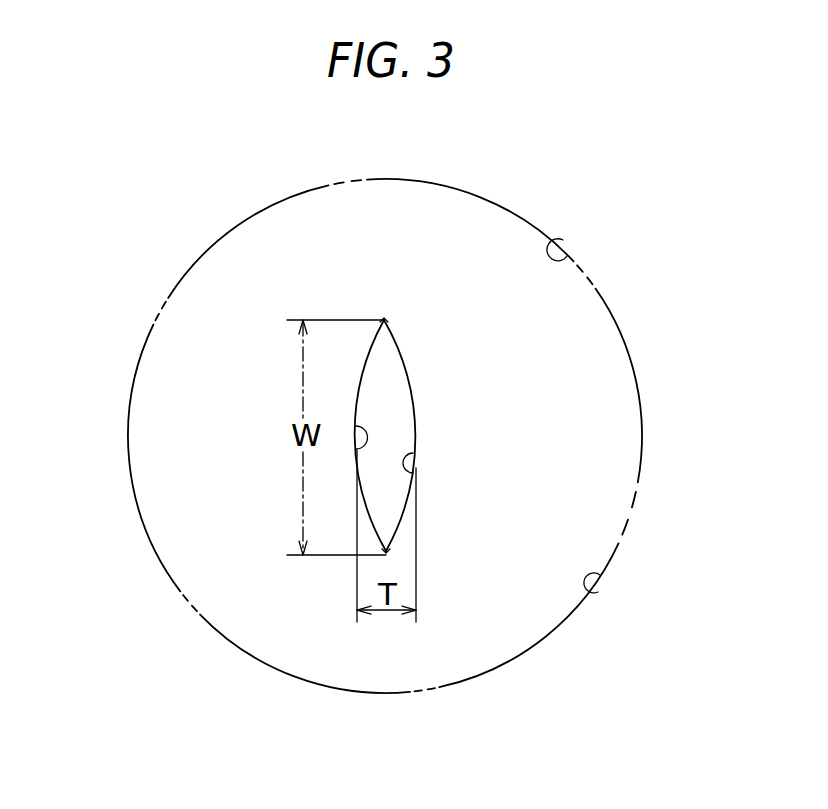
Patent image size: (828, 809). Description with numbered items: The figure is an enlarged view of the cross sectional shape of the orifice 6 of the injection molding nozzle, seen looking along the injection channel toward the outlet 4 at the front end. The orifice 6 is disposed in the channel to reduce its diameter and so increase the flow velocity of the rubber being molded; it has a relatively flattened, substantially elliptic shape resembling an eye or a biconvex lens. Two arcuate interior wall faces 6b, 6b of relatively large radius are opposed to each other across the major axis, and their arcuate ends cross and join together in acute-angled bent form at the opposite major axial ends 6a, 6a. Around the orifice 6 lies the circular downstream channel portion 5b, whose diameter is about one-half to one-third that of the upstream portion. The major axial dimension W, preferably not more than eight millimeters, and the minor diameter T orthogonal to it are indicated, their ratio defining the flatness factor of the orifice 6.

The outlet 4 is at (573, 257).
The orifice 6 is at (411, 393).
The opposite major axial ends 6a is at (384, 320).
The curved interior wall faces 6b is at (343, 462).
The downstream channel portion 5b is at (593, 593).